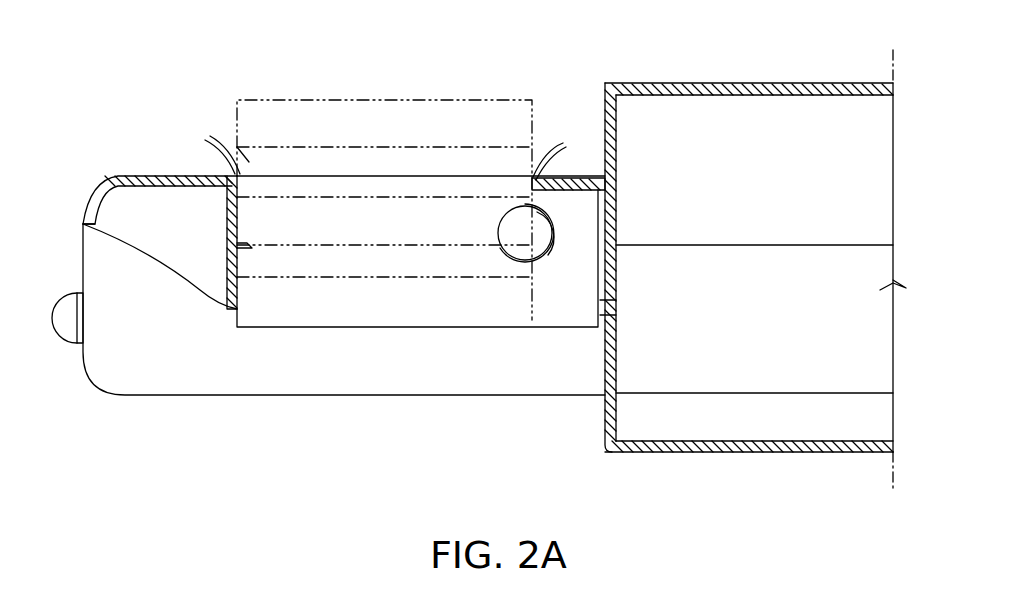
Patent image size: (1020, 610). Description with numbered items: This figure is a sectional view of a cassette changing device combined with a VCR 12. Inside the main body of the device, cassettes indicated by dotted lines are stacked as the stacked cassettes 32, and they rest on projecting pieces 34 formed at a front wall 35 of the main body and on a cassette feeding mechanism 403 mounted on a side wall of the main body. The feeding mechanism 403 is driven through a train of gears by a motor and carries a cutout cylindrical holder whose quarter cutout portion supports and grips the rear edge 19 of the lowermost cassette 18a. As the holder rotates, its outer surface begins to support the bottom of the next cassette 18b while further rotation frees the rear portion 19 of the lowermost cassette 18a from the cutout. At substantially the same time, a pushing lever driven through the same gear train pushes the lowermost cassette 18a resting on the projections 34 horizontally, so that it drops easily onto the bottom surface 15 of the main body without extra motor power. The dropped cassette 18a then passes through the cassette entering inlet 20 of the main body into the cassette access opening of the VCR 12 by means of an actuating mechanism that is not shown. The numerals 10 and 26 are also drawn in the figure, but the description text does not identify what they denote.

The main body 10 is at (285, 396).
The VCR 12 is at (710, 86).
The bottom surface 15 is at (370, 328).
The lowermost cassette 18a is at (395, 230).
The next cassette 18b is at (236, 150).
The rear edge 19 is at (522, 240).
The cassette entering inlet 20 is at (612, 290).
The slot 26 is at (612, 316).
The stacked cassettes 32 is at (440, 100).
The projecting pieces 34 is at (230, 260).
The front wall 35 is at (160, 175).
The cassette feeding mechanism 403 is at (550, 220).